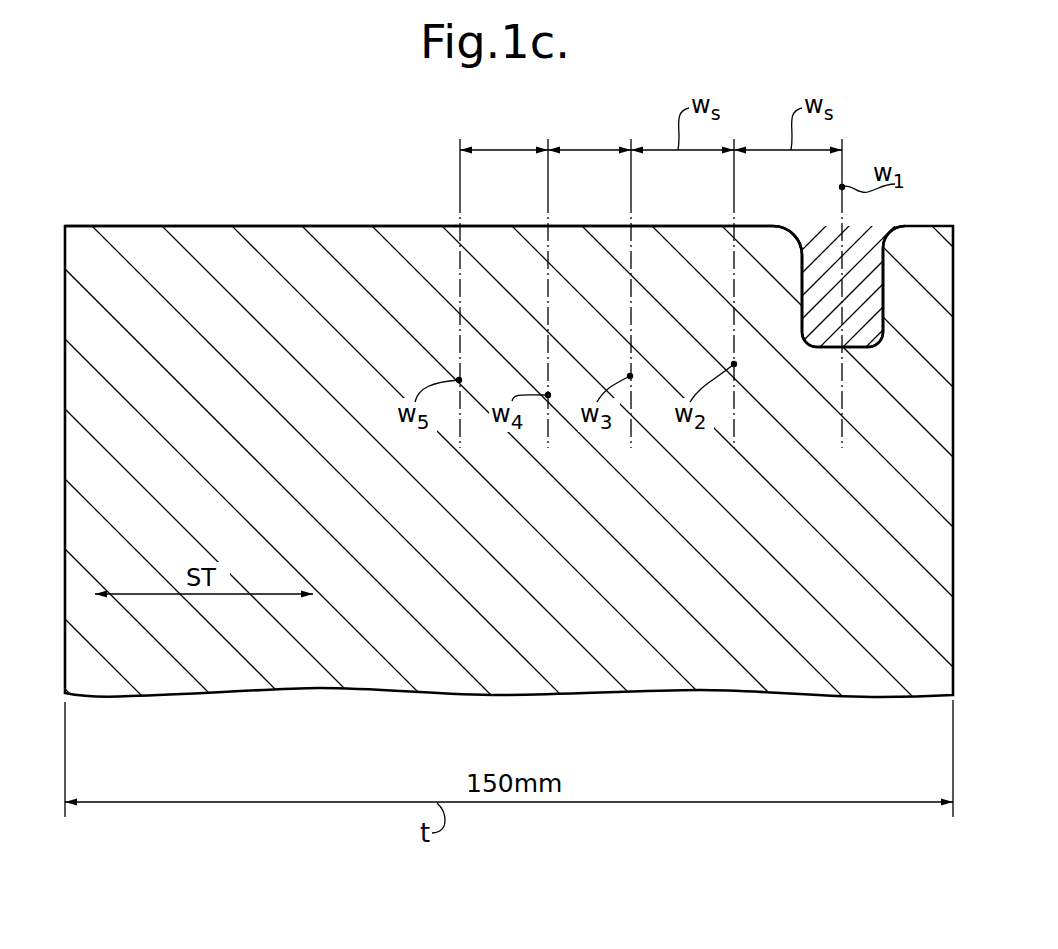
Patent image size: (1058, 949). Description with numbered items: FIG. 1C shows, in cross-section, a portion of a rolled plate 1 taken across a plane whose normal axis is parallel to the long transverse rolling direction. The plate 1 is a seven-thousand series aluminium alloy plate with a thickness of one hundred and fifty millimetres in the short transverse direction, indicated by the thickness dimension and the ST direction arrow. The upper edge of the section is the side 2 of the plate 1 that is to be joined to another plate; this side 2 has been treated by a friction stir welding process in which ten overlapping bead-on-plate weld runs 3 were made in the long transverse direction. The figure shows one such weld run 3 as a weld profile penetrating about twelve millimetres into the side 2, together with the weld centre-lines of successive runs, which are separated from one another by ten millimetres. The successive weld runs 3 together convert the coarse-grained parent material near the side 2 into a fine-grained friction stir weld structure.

The rolled plate 1 is at (105, 436).
The side of the plate 2 is at (286, 214).
The weld run 3 is at (866, 298).